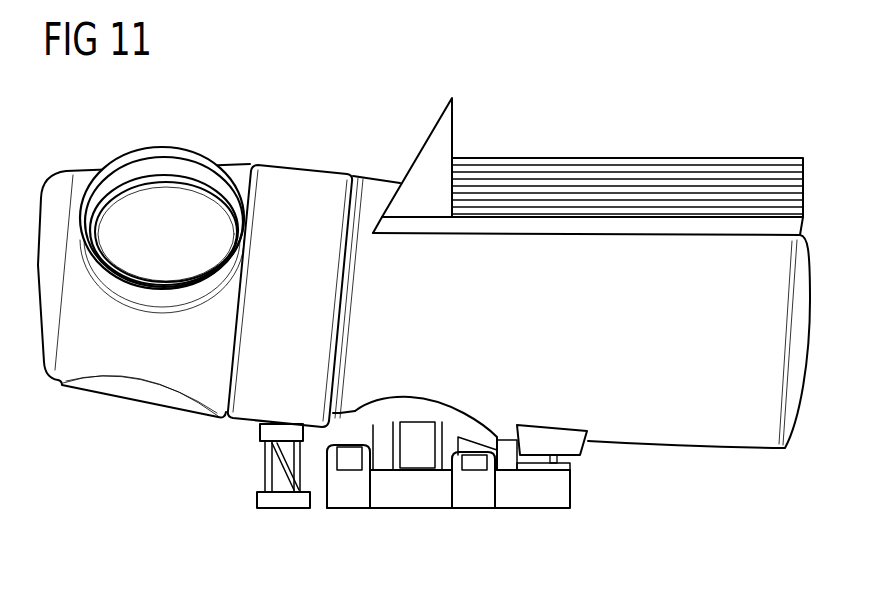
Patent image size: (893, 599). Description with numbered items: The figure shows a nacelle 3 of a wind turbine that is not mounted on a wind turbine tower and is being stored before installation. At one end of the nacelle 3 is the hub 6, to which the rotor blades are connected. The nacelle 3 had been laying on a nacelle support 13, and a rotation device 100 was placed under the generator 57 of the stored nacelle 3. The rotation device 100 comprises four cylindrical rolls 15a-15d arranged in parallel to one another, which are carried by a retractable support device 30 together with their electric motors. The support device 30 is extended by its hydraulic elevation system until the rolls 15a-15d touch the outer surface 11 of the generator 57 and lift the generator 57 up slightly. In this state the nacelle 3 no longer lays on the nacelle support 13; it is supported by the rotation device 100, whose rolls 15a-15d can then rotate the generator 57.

The nacelle 3 is at (700, 135).
The hub 6 is at (85, 172).
The outer surface 11 is at (237, 422).
The nacelle support 13 is at (560, 490).
The cylindrical rolls 15a-15d is at (298, 434).
The retractable support device 30 is at (277, 478).
The generator 57 is at (303, 182).
The rotation device 100 is at (303, 501).